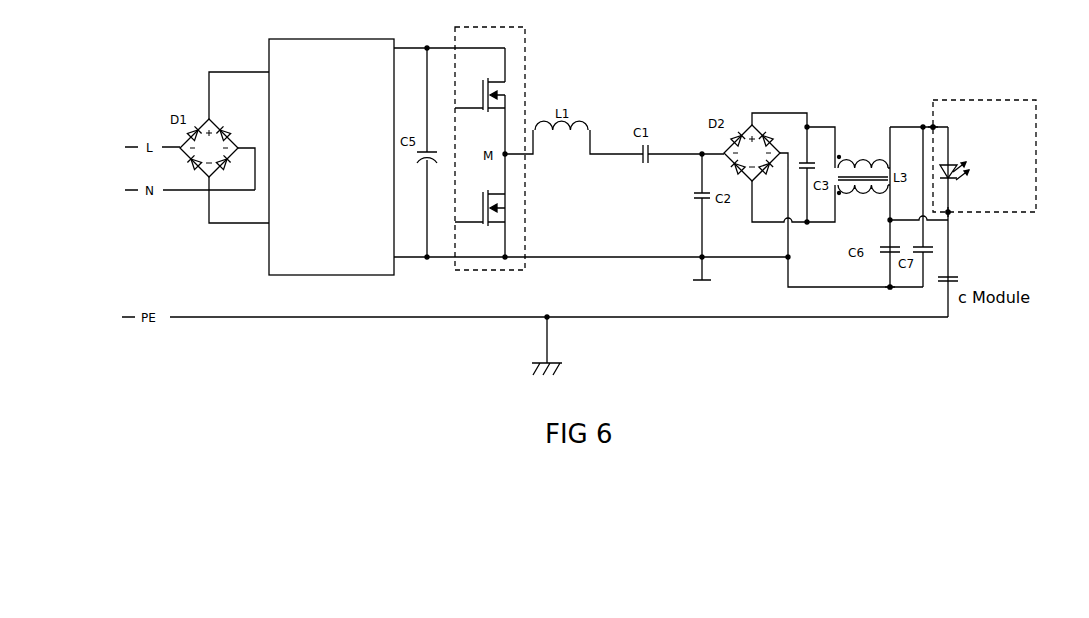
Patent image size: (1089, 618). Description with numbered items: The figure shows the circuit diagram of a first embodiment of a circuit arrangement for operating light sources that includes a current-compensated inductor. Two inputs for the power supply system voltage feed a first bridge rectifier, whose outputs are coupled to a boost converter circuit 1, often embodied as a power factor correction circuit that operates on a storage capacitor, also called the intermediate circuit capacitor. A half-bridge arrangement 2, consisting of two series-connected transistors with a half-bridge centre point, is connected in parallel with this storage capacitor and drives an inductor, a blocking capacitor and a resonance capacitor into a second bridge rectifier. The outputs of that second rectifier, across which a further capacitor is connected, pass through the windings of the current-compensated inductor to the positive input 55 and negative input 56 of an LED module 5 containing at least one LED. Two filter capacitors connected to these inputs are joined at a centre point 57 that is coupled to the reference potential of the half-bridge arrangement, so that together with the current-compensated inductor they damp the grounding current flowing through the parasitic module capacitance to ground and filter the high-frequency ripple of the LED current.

The boost converter circuit 1 is at (331, 157).
The half-bridge arrangement 2 is at (523, 30).
The LED module 5 is at (1018, 108).
The positive input 55 is at (933, 126).
The negative input 56 is at (952, 214).
The centre point 57 is at (892, 289).